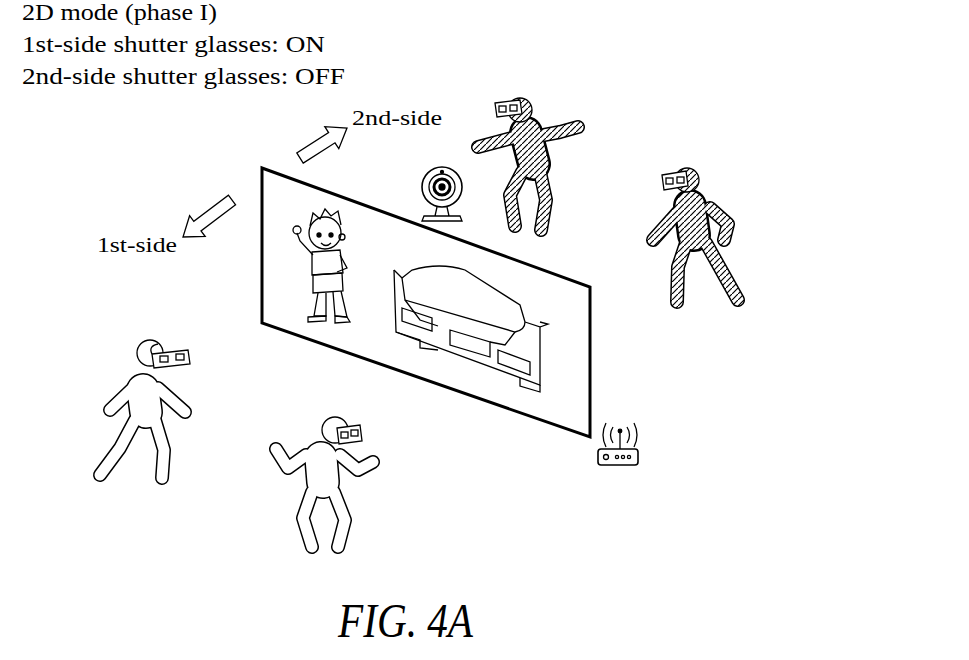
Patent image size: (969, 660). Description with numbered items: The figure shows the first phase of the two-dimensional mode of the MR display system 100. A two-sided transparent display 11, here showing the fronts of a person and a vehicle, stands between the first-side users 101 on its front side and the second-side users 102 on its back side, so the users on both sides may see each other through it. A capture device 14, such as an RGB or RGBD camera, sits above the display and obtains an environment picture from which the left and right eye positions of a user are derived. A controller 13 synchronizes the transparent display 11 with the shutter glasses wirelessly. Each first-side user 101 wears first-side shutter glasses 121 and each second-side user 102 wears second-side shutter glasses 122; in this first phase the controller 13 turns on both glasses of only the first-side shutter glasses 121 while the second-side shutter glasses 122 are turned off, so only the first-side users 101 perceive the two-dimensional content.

The MR display system 100 is at (172, 177).
The transparent display 11 is at (576, 283).
The capture device 14 is at (421, 174).
The controller 13 is at (643, 458).
The first-side users 101 is at (265, 432).
The first-side shutter glasses 121 is at (171, 350).
The second-side users 102 is at (615, 169).
The second-side shutter glasses 122 is at (503, 100).